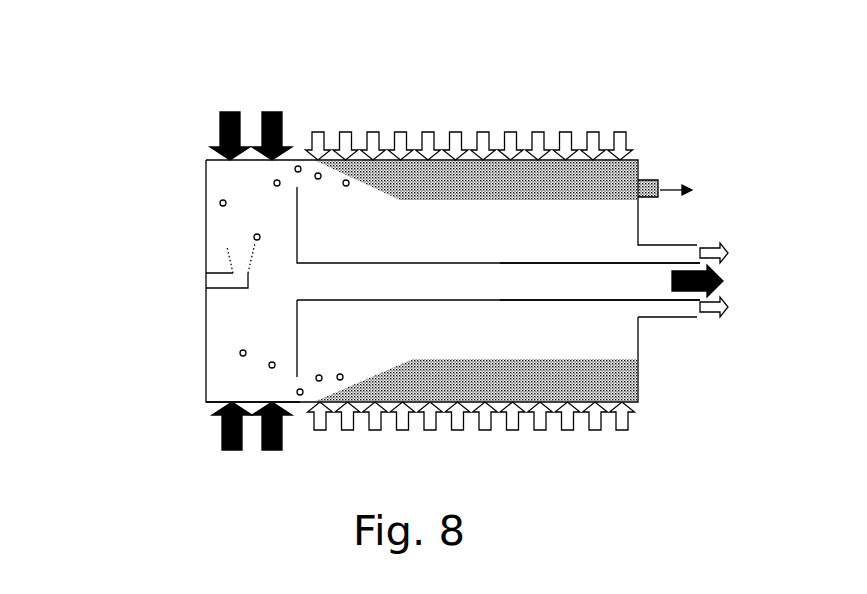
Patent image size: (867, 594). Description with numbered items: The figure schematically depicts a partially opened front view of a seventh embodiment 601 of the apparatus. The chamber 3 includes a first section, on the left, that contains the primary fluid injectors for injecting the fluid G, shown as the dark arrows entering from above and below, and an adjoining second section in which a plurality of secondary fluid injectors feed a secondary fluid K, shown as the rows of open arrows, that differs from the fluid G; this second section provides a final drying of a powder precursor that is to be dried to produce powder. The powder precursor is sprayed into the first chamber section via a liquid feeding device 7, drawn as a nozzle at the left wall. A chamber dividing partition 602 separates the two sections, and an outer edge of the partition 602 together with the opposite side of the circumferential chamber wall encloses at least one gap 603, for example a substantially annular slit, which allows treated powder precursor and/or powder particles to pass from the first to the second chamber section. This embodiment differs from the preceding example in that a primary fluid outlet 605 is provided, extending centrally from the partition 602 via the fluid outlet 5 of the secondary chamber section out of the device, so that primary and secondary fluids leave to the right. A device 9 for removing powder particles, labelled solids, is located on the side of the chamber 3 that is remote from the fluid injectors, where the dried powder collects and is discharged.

The apparatus embodiment 601 is at (190, 148).
The chamber dividing partition 602 is at (296, 212).
The gap 603 is at (297, 380).
The liquid feeding device 7 is at (206, 290).
The chamber 3 is at (210, 409).
The fluid outlet 5 is at (673, 315).
The primary fluid outlet 605 is at (648, 298).
The device for removing powder particles 9 is at (650, 163).
The fluid G is at (251, 287).
The secondary fluid K is at (553, 123).